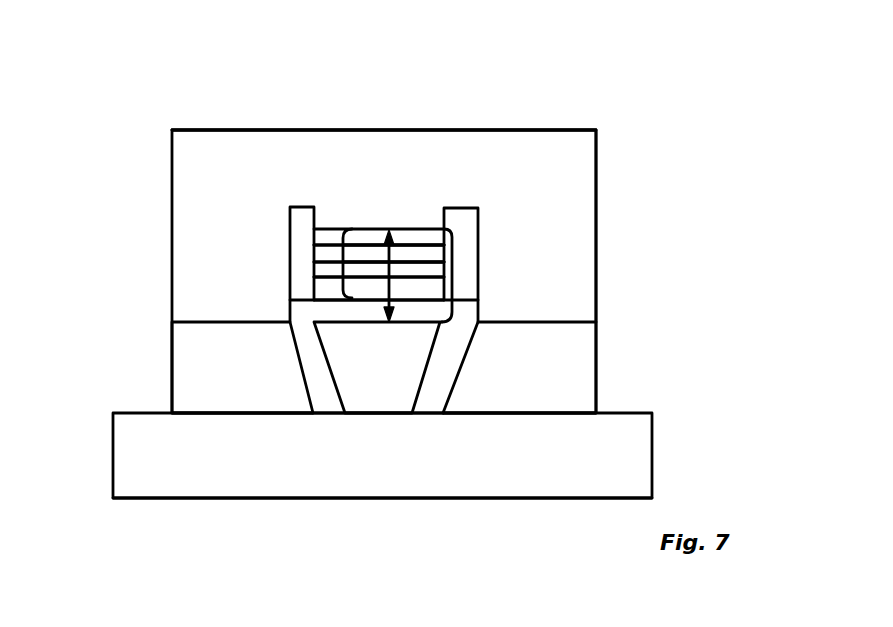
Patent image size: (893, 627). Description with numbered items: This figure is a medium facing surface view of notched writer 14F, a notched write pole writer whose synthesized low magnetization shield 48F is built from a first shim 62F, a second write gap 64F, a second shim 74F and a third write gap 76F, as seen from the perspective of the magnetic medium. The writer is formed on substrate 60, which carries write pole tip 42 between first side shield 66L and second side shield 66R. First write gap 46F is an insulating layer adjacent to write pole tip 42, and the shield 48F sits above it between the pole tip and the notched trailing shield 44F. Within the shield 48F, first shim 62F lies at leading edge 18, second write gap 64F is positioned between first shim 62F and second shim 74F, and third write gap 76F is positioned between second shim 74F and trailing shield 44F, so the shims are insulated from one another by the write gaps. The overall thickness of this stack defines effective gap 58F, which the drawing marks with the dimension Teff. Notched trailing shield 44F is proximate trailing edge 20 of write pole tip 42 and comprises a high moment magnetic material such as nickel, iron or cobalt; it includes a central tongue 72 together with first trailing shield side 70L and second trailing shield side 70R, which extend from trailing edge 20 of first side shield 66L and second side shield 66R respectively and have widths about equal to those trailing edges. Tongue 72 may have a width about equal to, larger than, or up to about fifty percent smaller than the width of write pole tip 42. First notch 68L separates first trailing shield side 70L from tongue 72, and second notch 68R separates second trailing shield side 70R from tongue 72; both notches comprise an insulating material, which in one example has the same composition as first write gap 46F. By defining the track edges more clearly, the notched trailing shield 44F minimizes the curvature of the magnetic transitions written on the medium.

The notched writer 14F is at (158, 130).
The trailing edge 20 is at (287, 130).
The notched trailing shield 44F is at (404, 168).
The substrate 60 is at (388, 480).
The leading edge 18 is at (213, 498).
The first side shield 66L is at (247, 401).
The second side shield 66R is at (550, 404).
The write pole tip 42 is at (389, 400).
The first write gap 46F is at (306, 326).
The first notch 68L is at (300, 218).
The second notch 68R is at (470, 220).
The third write gap 76F is at (320, 236).
The second shim 74F is at (323, 247).
The second write gap 64F is at (342, 257).
The synthesized low magnetization shield 48F is at (330, 270).
The first shim 62F is at (328, 281).
The effective gap 58F is at (453, 257).
The effective thickness Teff is at (392, 250).
The tongue 72 is at (430, 217).
The first trailing shield side 70L is at (204, 303).
The second trailing shield side 70R is at (558, 232).